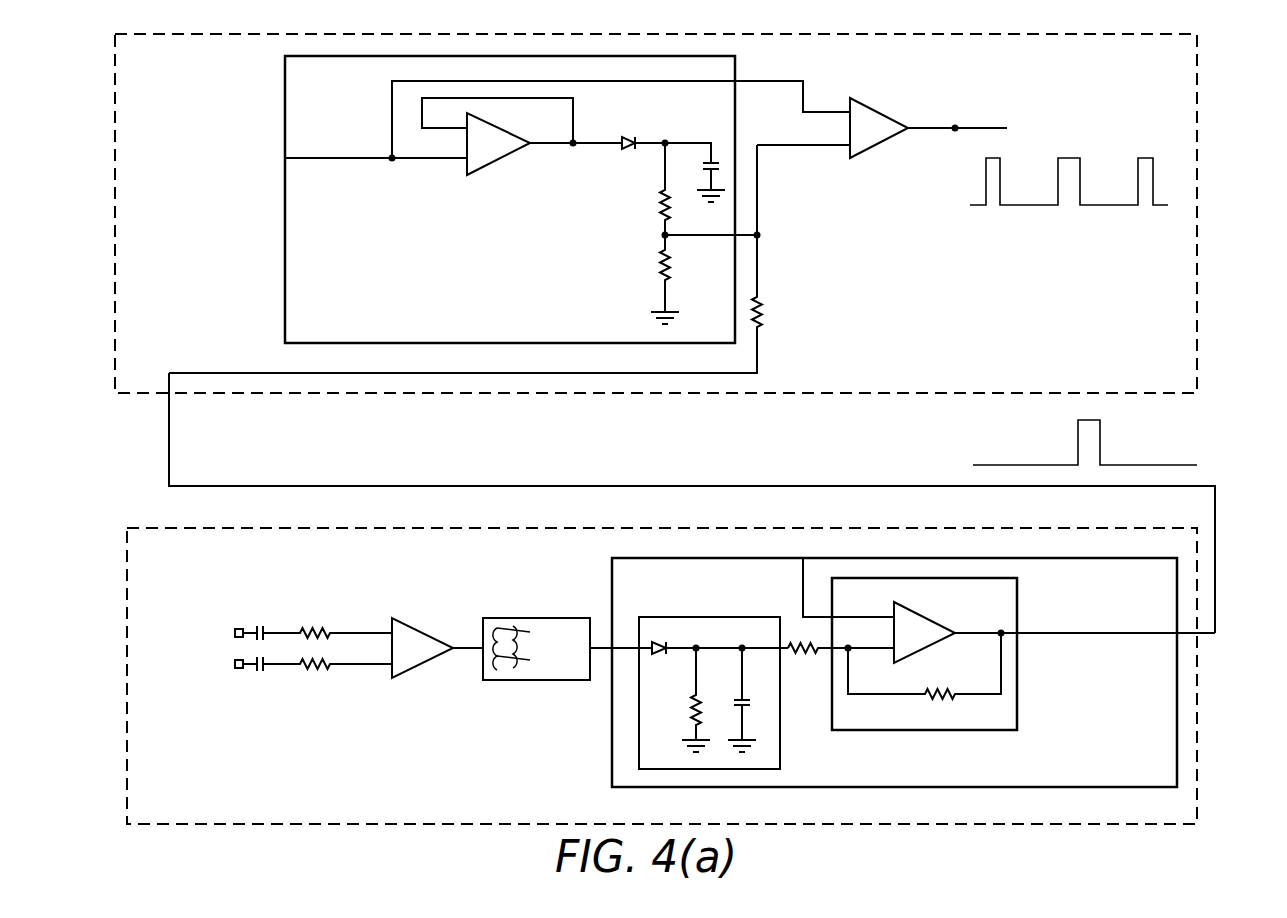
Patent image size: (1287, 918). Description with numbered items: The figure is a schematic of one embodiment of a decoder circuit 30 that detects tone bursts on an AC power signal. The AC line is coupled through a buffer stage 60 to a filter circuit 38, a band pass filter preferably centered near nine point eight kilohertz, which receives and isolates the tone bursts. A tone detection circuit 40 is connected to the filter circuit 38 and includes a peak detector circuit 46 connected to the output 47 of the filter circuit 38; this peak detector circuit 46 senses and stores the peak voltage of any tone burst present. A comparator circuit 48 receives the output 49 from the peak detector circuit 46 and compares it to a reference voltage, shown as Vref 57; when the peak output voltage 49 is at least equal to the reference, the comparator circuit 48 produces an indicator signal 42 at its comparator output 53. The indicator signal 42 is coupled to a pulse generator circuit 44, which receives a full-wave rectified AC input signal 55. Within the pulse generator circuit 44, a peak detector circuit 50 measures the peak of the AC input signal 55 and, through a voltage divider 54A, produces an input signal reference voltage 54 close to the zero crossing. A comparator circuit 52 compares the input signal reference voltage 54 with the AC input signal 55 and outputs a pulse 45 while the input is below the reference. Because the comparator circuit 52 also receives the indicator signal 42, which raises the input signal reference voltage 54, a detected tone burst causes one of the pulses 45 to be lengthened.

The decoder circuit 30 is at (127, 557).
The filter circuit 38 is at (522, 680).
The tone detection circuit 40 is at (891, 658).
The indicator signal 42 is at (1108, 421).
The pulse generator circuit 44 is at (1221, 139).
The pulses 45 is at (1068, 165).
The peak detector circuit 46 is at (727, 758).
The output of the filter circuit 47 is at (612, 582).
The comparator circuit 48 is at (987, 714).
The output from the peak detector circuit 49 is at (832, 650).
The peak detector circuit 50 is at (322, 95).
The comparator circuit 52 is at (875, 122).
The comparator output 53 is at (1216, 503).
The input signal reference voltage 54 is at (760, 235).
The voltage divider 54A is at (656, 241).
The full-wave rectified AC input signal 55 is at (215, 130).
The reference voltage Vref 57 is at (701, 573).
The buffer stage 60 is at (414, 686).